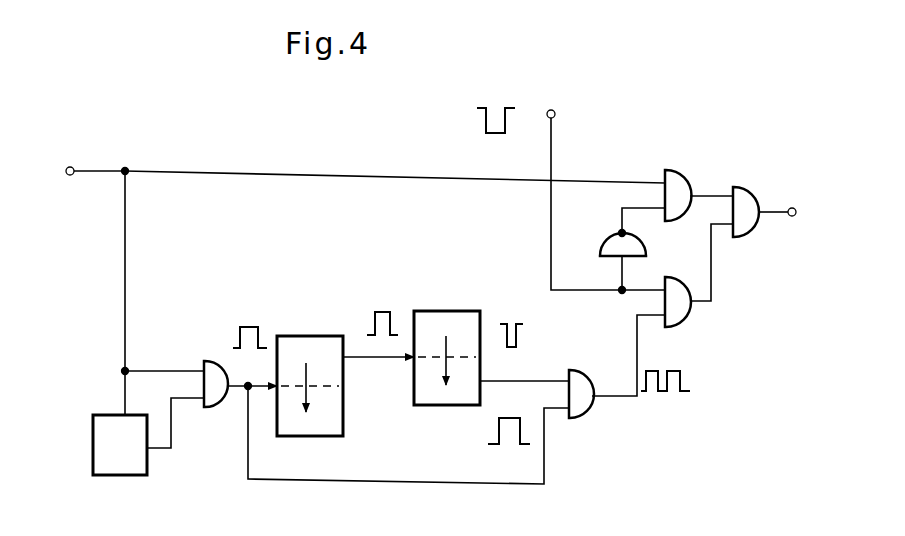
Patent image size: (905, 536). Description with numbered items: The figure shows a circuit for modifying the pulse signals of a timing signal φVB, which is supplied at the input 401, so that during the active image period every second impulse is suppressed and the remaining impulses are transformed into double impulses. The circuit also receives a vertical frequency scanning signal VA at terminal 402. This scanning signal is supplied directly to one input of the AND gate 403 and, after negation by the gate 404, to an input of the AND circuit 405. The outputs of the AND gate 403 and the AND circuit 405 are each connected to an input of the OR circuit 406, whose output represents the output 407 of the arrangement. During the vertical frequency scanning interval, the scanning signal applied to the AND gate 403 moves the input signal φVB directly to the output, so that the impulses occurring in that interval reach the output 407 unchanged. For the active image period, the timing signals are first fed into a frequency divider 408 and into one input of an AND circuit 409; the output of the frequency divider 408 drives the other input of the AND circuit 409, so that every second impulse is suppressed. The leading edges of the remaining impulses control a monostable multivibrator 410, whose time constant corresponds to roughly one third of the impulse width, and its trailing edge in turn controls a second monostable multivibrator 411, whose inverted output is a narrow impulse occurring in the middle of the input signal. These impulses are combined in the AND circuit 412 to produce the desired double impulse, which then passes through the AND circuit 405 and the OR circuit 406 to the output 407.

The input 401 is at (93, 175).
The input terminal (VA signal) 402 is at (570, 106).
The AND gate 403 is at (677, 315).
The gate 404 is at (637, 239).
The AND circuit 405 is at (685, 172).
The OR circuit 406 is at (744, 186).
The output 407 is at (796, 199).
The frequency divider 408 is at (128, 465).
The AND circuit 409 is at (227, 362).
The monostable multivibrator 410 is at (317, 344).
The second monostable multivibrator 411 is at (452, 319).
The AND circuit 412 is at (588, 365).